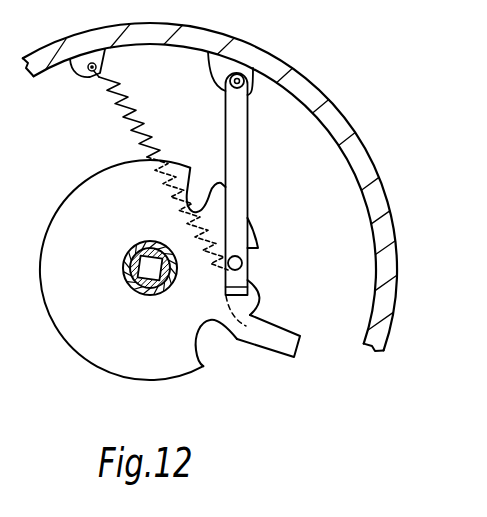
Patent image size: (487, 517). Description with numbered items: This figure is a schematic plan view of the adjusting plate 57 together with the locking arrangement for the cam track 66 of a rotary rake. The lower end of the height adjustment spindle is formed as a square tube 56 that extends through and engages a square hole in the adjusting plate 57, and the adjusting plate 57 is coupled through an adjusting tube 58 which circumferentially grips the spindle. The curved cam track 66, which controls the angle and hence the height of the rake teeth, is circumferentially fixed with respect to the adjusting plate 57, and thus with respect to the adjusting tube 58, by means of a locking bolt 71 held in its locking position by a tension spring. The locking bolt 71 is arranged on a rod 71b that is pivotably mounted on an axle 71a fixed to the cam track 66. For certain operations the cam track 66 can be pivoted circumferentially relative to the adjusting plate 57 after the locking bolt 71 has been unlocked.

The square tube 56 is at (125, 268).
The adjusting plate 57 is at (75, 328).
The adjusting tube 58 is at (150, 294).
The cam track 66 is at (388, 237).
The locking bolt 71 is at (243, 263).
The axle 71a is at (243, 78).
The rod 71b is at (240, 173).